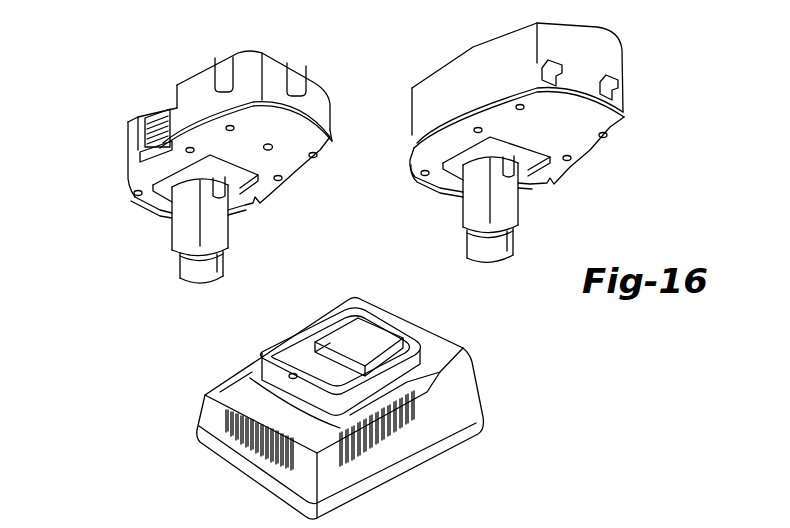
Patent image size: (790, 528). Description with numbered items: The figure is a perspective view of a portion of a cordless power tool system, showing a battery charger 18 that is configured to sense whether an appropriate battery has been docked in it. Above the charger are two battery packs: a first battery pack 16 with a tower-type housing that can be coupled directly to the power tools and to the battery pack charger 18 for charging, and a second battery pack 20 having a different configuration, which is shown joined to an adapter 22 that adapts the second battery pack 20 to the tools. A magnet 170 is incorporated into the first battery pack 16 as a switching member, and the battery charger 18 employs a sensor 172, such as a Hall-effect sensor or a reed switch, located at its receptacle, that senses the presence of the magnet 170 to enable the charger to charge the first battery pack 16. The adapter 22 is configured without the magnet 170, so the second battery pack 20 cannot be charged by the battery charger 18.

The first battery pack 16 is at (115, 140).
The battery pack charger 18 is at (442, 341).
The second battery pack 20 is at (592, 48).
The adapter 22 is at (598, 150).
The magnet 170 is at (267, 152).
The sensor 172 is at (292, 372).